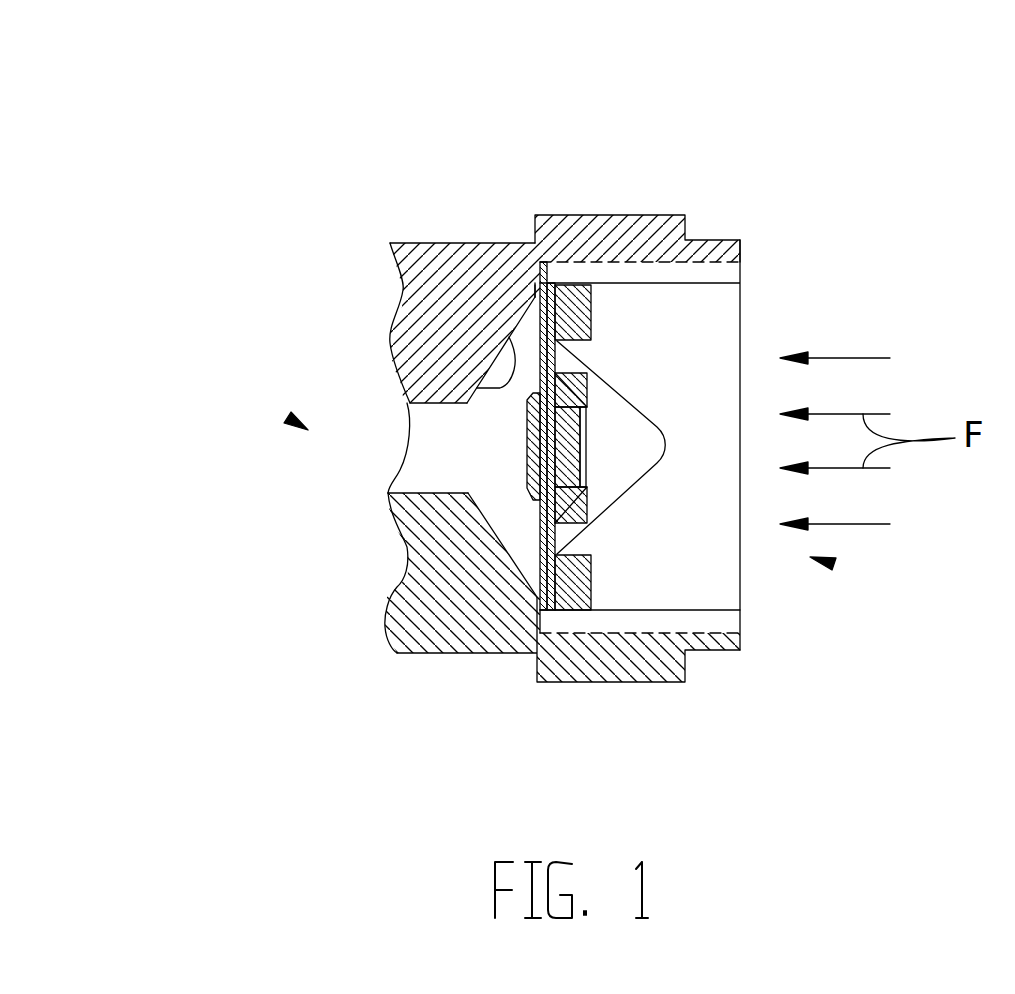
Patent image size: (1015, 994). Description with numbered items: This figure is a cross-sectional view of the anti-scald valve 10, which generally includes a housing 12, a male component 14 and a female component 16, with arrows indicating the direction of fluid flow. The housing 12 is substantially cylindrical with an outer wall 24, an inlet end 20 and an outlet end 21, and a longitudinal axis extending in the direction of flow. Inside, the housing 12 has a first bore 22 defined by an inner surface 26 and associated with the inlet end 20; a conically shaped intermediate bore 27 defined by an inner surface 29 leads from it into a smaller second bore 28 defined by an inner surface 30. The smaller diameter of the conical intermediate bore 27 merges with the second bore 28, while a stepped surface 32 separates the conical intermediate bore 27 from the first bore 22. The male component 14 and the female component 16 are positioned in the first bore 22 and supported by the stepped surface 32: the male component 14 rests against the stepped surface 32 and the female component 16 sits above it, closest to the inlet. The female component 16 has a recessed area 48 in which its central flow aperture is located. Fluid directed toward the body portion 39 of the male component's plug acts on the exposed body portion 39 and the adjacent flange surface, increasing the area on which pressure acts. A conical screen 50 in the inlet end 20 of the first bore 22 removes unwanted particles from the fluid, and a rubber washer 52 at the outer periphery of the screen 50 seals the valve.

The anti-scald valve 10 is at (576, 355).
The housing 12 is at (562, 490).
The male component 14 is at (392, 446).
The female component 16 is at (622, 359).
The inlet end 20 is at (897, 585).
The outlet end 21 is at (235, 392).
The first bore 22 is at (706, 445).
The outer wall 24 is at (495, 243).
The inner surface 26 is at (681, 648).
The conically shaped intermediate bore 27 is at (466, 643).
The second bore 28 is at (360, 509).
The inner surface 29 is at (428, 326).
The inner surface 30 is at (387, 416).
The stepped surface 32 is at (440, 244).
The body portion 39 is at (684, 296).
The recessed area 48 is at (723, 498).
The screen 50 is at (636, 625).
The rubber washer 52 is at (664, 239).